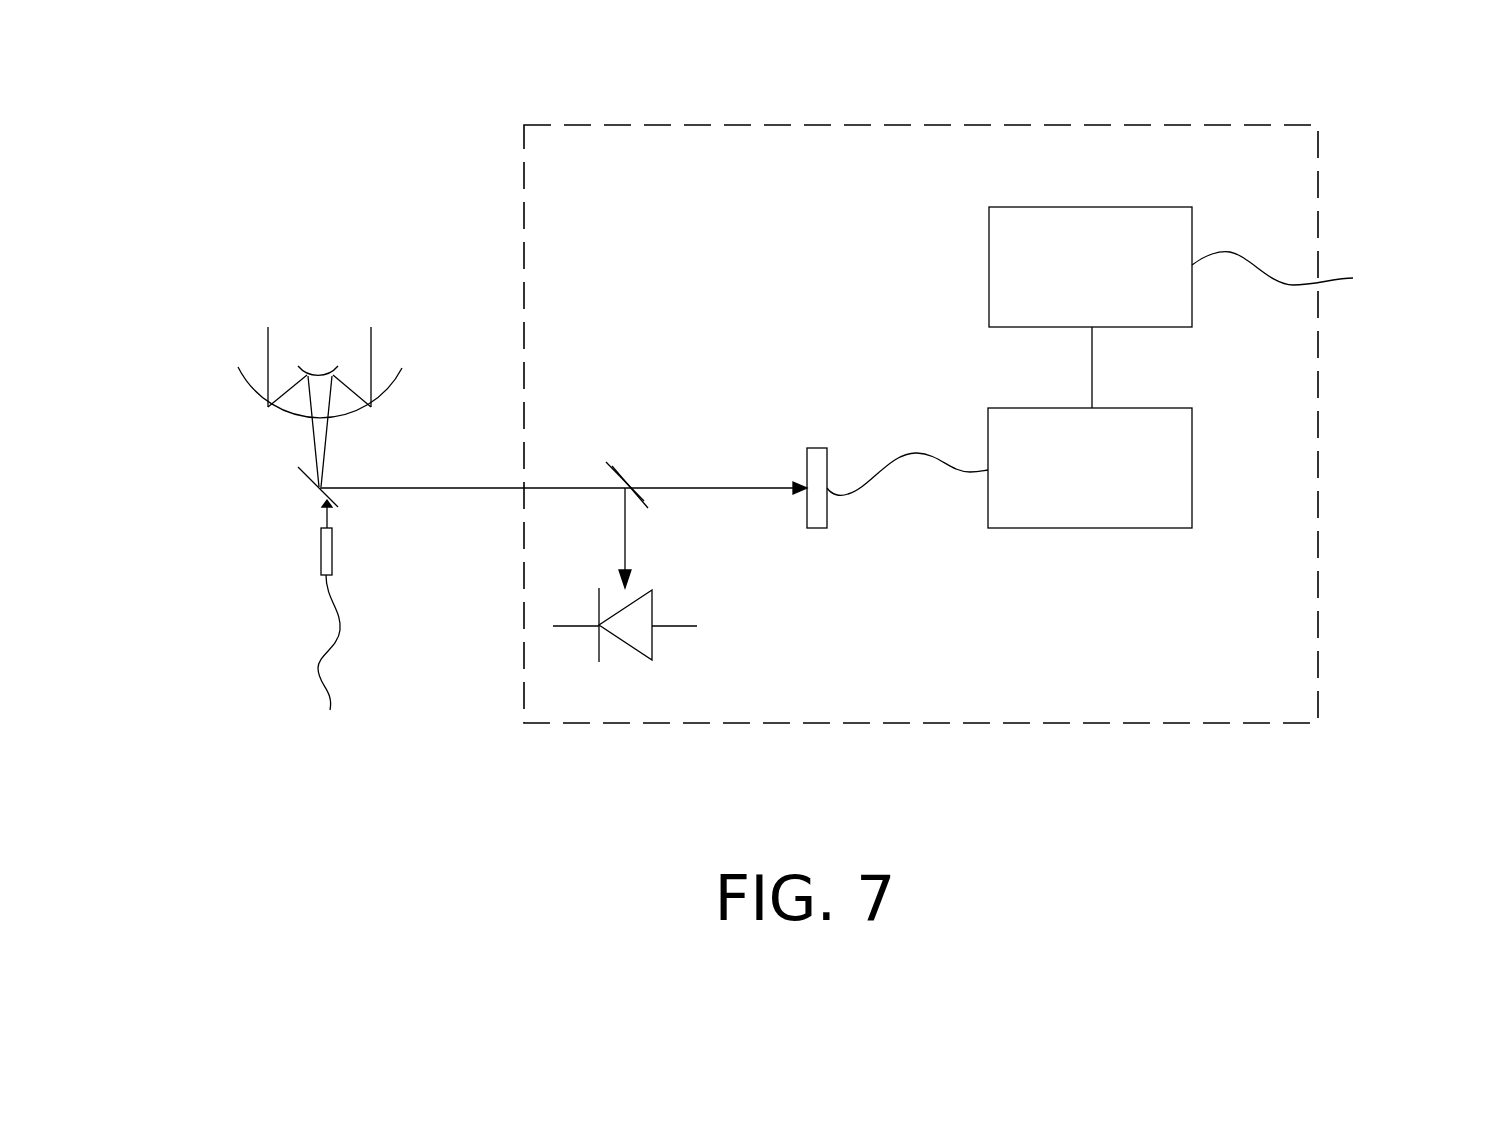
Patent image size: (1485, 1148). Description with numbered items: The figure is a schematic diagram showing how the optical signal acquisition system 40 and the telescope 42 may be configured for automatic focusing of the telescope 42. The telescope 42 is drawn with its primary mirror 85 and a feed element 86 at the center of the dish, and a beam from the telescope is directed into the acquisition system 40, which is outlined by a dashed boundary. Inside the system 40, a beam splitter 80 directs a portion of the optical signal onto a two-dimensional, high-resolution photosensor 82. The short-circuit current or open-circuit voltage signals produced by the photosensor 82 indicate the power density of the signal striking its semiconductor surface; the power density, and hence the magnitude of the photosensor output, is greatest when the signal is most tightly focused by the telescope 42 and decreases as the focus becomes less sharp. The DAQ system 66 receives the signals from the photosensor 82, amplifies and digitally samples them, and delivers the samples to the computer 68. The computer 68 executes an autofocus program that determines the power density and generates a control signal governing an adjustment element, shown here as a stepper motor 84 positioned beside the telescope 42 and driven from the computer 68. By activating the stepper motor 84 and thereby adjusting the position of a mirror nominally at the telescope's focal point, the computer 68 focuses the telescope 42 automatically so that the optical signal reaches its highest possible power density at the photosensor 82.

The optical signal acquisition system 40 is at (1297, 683).
The telescope 42 is at (283, 378).
The primary mirror 85 is at (245, 392).
The feed horn 86 is at (315, 375).
The stepper motor 84 is at (320, 547).
The beam splitter 80 is at (617, 472).
The photosensor 82 is at (818, 447).
The DAQ system 66 is at (1193, 465).
The computer 68 is at (1142, 206).